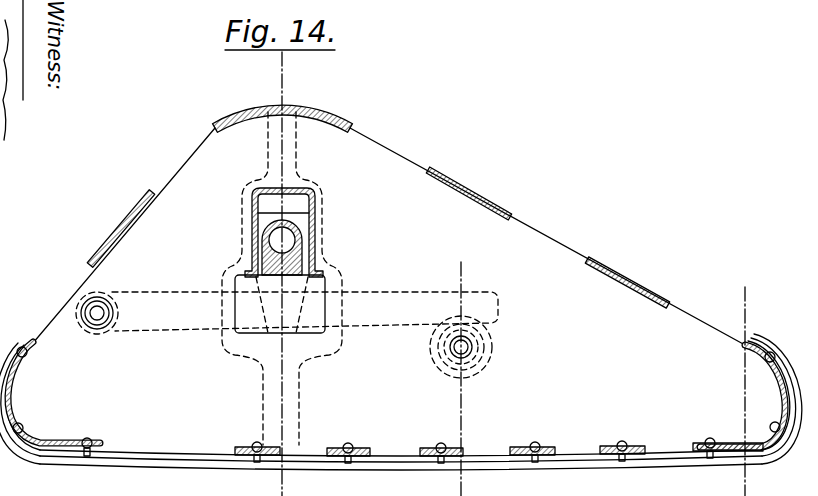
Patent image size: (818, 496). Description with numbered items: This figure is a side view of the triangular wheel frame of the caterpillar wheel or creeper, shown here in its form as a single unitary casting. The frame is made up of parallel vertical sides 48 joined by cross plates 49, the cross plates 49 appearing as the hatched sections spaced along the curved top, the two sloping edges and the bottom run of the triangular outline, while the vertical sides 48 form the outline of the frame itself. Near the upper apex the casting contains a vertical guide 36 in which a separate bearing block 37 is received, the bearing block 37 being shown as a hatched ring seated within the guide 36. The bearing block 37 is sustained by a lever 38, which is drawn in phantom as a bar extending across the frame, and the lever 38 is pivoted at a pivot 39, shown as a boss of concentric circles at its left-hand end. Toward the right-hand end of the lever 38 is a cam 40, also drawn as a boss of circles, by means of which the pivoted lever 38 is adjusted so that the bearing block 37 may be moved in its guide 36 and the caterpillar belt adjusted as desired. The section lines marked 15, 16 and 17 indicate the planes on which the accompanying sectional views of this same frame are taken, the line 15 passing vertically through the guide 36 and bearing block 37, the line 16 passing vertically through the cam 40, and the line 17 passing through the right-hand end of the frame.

The section line 15 is at (292, 488).
The section line 16 is at (473, 480).
The section line 17 is at (755, 315).
The vertical guide 36 is at (258, 204).
The bearing block 37 is at (262, 223).
The lever 38 is at (191, 294).
The pivot 39 is at (91, 321).
The cam 40 is at (474, 349).
The parallel vertical sides 48 is at (401, 299).
The cross plates 49 is at (485, 203).